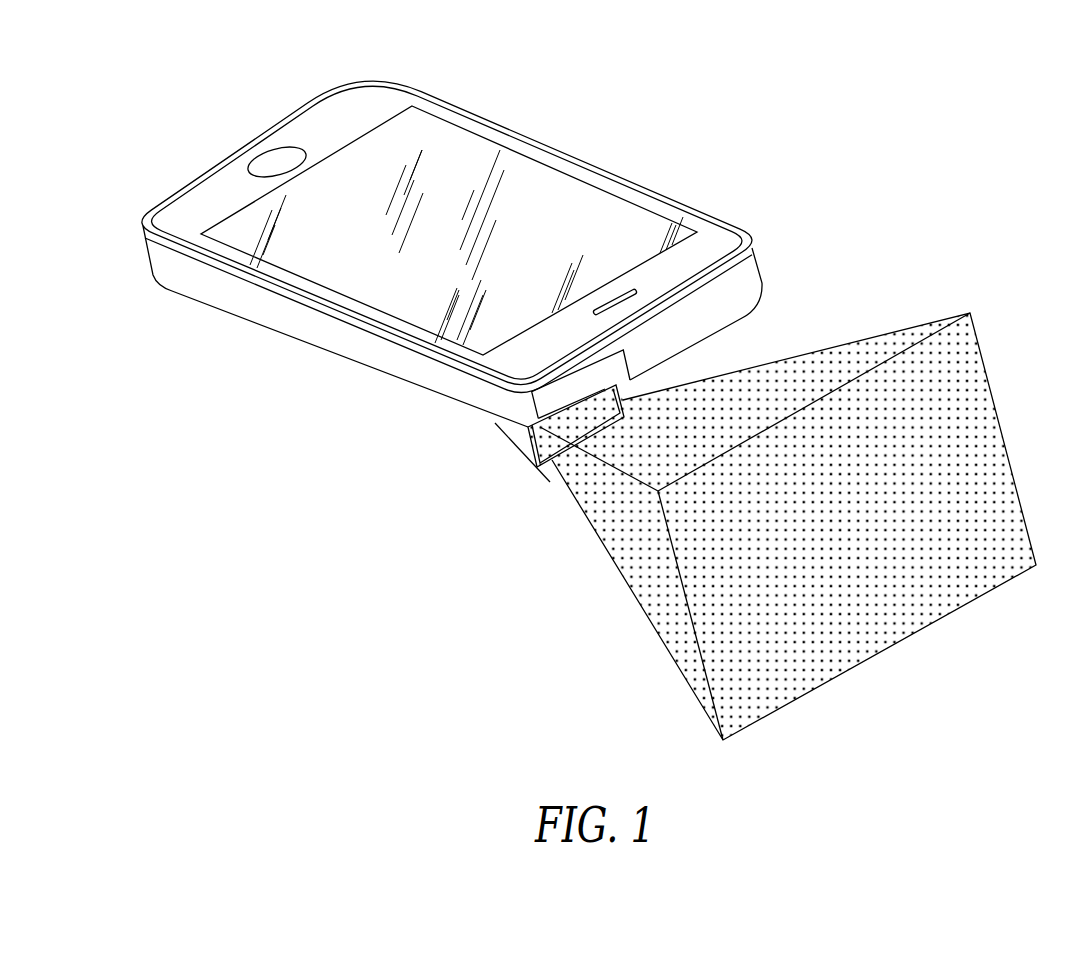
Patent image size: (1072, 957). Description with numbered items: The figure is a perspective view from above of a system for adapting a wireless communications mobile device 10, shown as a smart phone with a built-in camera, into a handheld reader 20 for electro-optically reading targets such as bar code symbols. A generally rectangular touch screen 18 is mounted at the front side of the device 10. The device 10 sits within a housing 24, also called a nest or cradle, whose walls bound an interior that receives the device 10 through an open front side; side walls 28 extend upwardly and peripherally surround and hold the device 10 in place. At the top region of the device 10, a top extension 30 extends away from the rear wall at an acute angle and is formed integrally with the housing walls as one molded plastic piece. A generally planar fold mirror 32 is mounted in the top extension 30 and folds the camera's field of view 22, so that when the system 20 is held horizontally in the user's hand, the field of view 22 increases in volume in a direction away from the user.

The wireless communications mobile device 10 is at (184, 209).
The touch screen 18 is at (508, 166).
The handheld reader 20 is at (204, 61).
The field of view 22 is at (631, 587).
The housing 24 is at (229, 315).
The side walls 28 is at (303, 109).
The top extension 30 is at (524, 447).
The fold mirror 32 is at (552, 466).